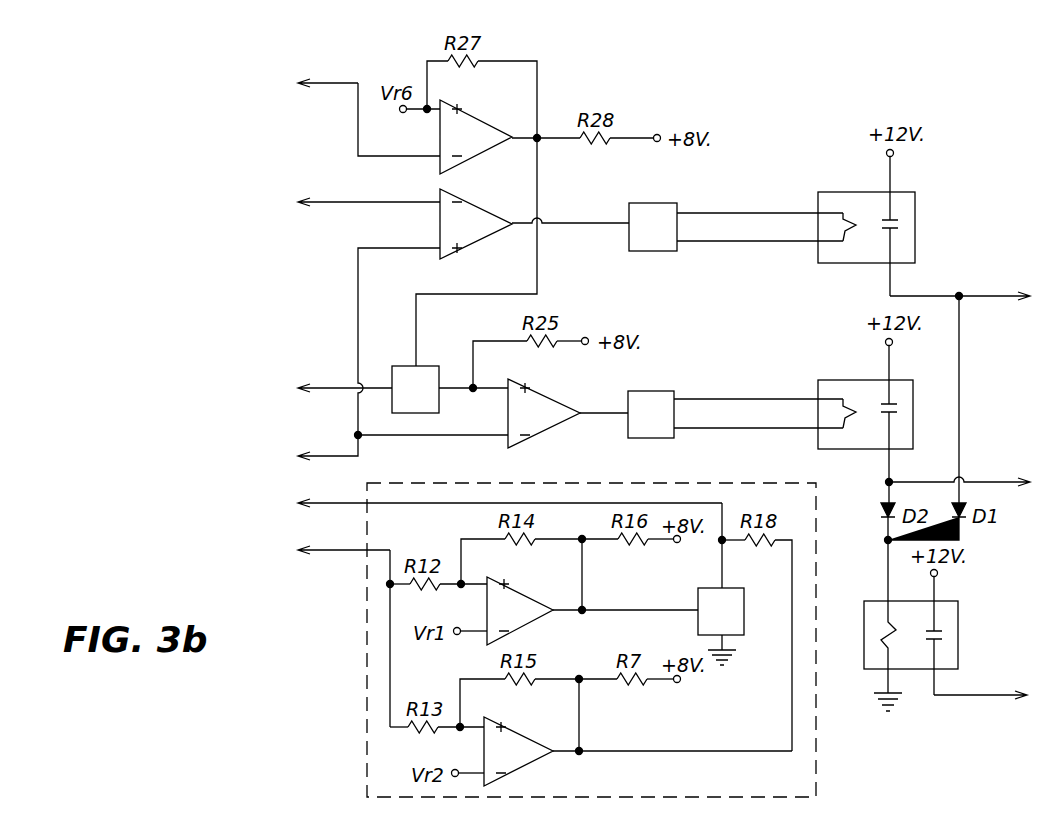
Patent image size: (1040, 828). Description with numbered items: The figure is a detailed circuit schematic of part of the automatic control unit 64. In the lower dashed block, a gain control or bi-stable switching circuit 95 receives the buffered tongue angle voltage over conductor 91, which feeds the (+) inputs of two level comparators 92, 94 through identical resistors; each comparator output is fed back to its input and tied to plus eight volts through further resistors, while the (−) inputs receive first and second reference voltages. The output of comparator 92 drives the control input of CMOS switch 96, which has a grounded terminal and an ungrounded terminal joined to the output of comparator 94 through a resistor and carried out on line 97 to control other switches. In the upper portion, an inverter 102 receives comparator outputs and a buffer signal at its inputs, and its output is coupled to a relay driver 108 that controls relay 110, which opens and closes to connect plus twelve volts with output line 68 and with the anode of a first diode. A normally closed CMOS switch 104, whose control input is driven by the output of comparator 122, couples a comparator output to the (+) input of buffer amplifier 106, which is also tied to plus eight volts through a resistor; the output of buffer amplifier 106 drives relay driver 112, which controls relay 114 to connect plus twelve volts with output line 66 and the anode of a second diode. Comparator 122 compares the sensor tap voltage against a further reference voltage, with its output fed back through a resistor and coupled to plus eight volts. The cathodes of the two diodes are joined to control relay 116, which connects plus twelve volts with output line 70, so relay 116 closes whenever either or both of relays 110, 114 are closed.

The automatic control unit 64 is at (744, 86).
The output line 66 is at (1008, 482).
The output line 68 is at (1000, 295).
The output line 70 is at (1000, 695).
The conductor 91 is at (375, 548).
The level comparator 92 is at (531, 598).
The level comparator 94 is at (523, 740).
The gain control or bi-stable switching circuit 95 is at (367, 631).
The CMOS switch 96 is at (733, 588).
The line 97 is at (701, 503).
The inverter 102 is at (468, 204).
The normally closed CMOS switch 104 is at (416, 364).
The buffer amplifier 106 is at (539, 399).
The relay driver 108 is at (660, 203).
The relay 110 is at (850, 192).
The relay driver 112 is at (656, 391).
The relay 114 is at (848, 380).
The relay 116 is at (963, 601).
The comparator 122 is at (466, 118).